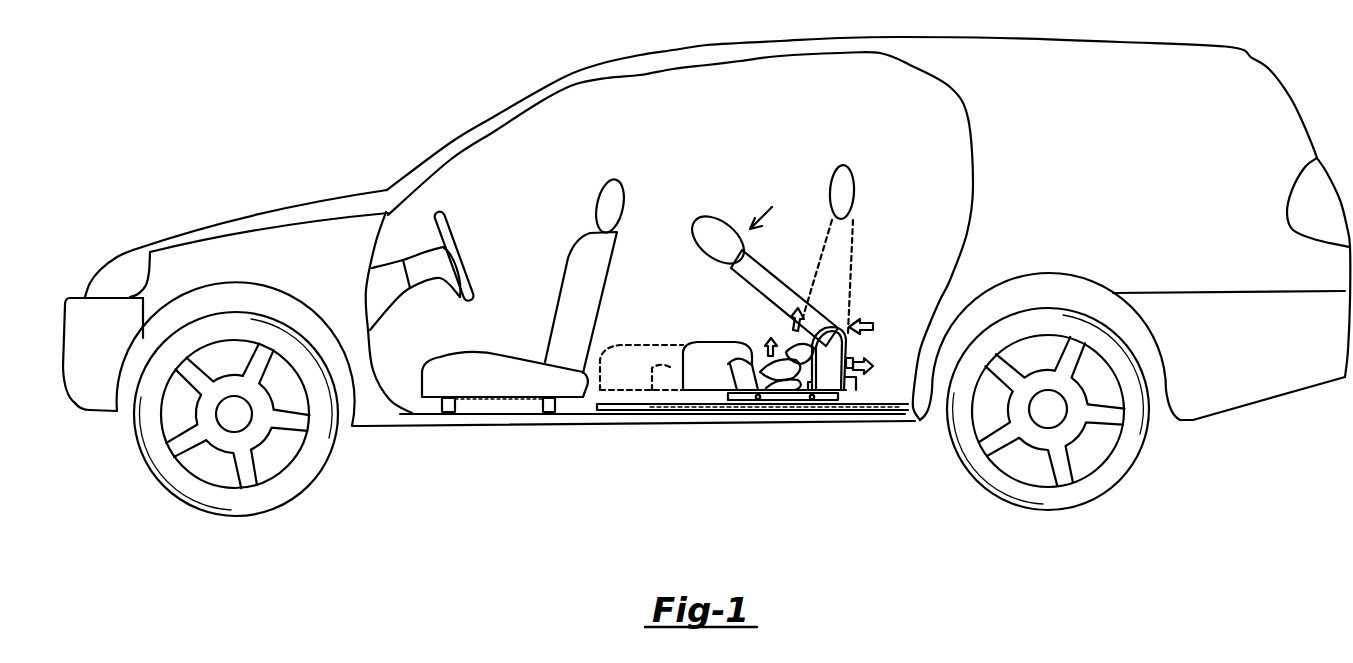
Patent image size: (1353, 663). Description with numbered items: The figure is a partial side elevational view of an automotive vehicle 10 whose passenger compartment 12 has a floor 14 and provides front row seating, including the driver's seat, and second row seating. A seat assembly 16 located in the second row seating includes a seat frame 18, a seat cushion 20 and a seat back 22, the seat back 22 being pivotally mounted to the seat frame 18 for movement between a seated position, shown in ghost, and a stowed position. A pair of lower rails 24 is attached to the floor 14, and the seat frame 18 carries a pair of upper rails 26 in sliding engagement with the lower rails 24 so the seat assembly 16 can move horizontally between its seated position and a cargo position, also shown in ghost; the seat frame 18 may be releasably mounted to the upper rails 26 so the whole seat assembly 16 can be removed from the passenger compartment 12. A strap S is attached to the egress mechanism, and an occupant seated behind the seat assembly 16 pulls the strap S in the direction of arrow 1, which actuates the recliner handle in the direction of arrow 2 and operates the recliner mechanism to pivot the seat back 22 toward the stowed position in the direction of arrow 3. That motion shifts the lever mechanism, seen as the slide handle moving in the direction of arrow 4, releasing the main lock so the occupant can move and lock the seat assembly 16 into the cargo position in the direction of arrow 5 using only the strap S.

The automotive vehicle 10 is at (345, 96).
The passenger compartment 12 is at (640, 112).
The floor 14 is at (420, 410).
The seat assembly 16 is at (669, 235).
The seat frame 18 is at (727, 374).
The seat cushion 20 is at (713, 347).
The seat back 22 is at (735, 268).
The lower rails 24 is at (600, 408).
The upper rails 26 is at (735, 400).
The strap S is at (855, 377).
The arrow 1 is at (873, 360).
The arrow 2 is at (789, 311).
The arrow 3 is at (817, 204).
The arrow 4 is at (762, 343).
The arrow 5 is at (871, 328).